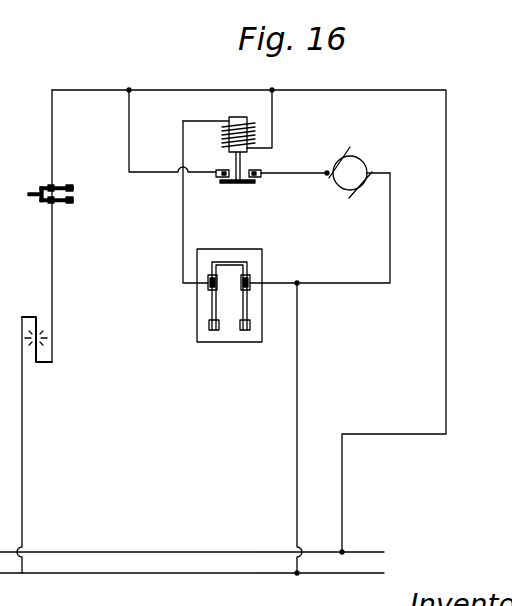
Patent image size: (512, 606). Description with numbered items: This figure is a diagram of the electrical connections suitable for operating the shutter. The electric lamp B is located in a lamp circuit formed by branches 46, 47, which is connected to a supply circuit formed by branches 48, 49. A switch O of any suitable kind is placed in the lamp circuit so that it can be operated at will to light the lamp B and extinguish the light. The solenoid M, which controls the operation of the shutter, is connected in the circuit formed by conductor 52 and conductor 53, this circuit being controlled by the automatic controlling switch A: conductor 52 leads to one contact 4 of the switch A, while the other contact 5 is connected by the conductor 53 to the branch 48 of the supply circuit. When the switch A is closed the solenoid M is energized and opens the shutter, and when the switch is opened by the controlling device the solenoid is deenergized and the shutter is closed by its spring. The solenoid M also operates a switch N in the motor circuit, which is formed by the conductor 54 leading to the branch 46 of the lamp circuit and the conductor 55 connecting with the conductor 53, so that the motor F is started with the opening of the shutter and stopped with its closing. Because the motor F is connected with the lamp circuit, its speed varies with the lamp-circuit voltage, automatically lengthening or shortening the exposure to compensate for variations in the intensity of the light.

The branch of the lamp circuit 47 is at (356, 98).
The branch of the supply circuit 48 is at (131, 576).
The supply circuit branch 49 is at (141, 553).
The branch of the lamp circuit 46 is at (36, 445).
The conductor 52 is at (183, 228).
The conductor 53 is at (296, 470).
The conductor 54 is at (294, 161).
The conductor 55 is at (387, 277).
The contact 4 is at (206, 286).
The contact 5 is at (251, 286).
The solenoid M is at (235, 117).
The switch N is at (243, 177).
The motor F is at (357, 172).
The switch O is at (58, 204).
The electric lamp B is at (45, 339).
The automatic controlling switch A is at (229, 295).